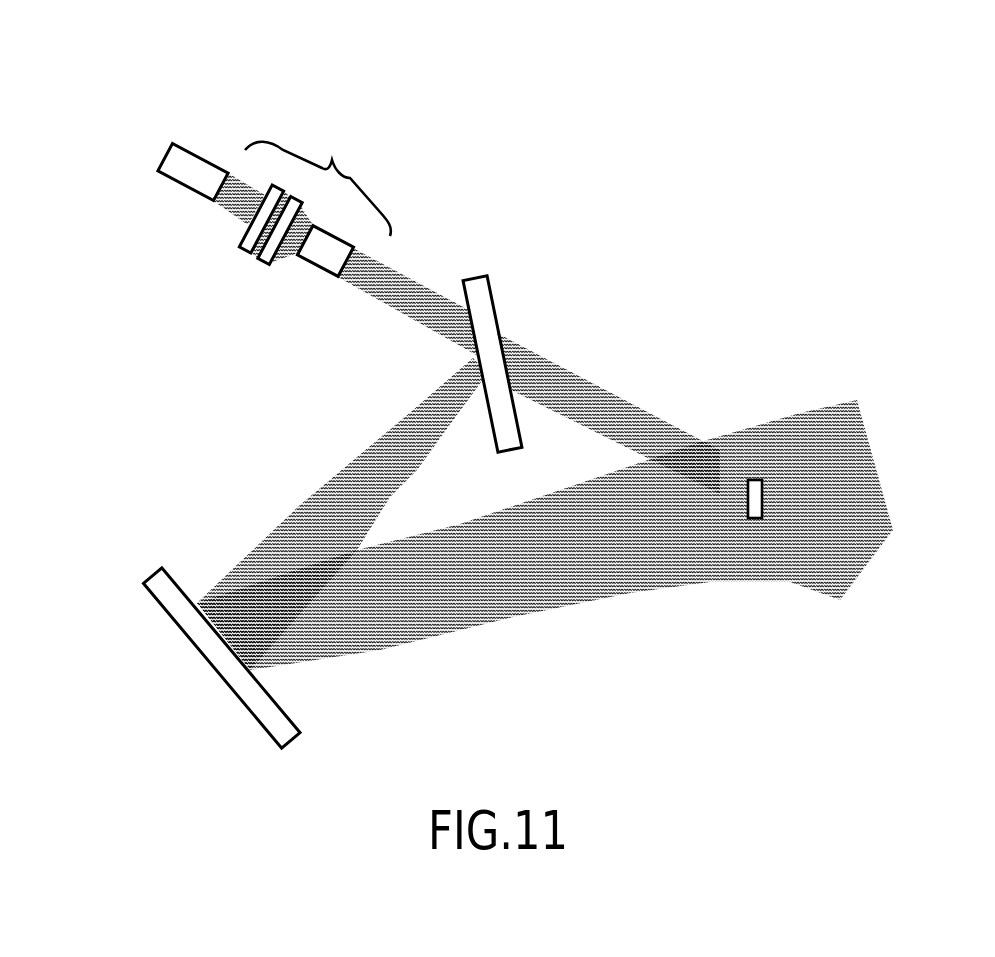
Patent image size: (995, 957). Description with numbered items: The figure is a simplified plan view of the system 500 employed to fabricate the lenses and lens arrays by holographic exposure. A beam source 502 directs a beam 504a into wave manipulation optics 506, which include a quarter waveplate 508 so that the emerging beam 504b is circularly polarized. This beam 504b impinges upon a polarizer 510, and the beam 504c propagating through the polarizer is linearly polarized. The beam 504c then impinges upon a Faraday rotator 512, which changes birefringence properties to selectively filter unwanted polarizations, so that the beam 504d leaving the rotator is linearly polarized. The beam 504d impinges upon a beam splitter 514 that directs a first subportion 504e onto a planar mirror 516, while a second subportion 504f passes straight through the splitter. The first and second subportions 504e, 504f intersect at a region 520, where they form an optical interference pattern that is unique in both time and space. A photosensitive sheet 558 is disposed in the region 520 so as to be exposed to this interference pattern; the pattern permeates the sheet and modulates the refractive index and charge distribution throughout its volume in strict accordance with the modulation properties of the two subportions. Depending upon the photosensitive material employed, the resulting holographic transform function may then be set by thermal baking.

The system 500 is at (622, 156).
The beam source 502 is at (163, 173).
The beam 504a is at (214, 212).
The beam 504b is at (234, 264).
The beam 504c is at (283, 258).
The beam 504d is at (341, 297).
The first subportion 504e is at (547, 490).
The second subportion 504f is at (558, 336).
The wave manipulation optics 506 is at (318, 182).
The quarter waveplate 508 is at (243, 252).
The polarizer 510 is at (260, 263).
The Faraday rotator 512 is at (317, 270).
The beam splitter 514 is at (480, 277).
The planar mirror 516 is at (152, 578).
The region 520 is at (773, 400).
The photosensitive sheet 558 is at (755, 518).